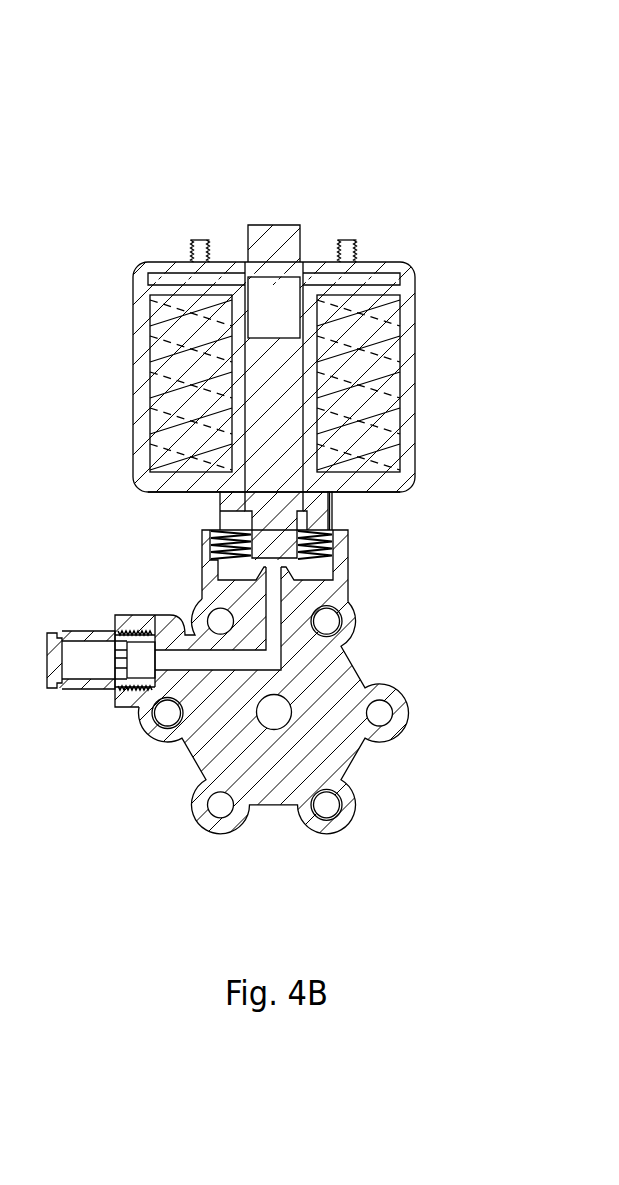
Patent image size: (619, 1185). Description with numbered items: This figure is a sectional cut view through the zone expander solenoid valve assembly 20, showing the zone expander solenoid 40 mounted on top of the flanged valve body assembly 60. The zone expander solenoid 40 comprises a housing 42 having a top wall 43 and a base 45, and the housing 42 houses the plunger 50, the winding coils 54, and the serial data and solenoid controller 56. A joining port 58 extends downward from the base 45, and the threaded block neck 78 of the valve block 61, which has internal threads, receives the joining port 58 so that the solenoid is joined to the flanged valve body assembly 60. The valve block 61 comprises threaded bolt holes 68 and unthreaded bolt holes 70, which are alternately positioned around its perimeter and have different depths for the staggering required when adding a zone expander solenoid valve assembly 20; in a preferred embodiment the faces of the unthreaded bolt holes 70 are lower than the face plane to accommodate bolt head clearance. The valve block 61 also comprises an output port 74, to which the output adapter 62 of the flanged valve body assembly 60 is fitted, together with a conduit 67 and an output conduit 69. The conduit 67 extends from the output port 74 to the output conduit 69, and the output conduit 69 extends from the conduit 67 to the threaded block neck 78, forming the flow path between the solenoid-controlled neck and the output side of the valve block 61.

The zone expander solenoid valve assembly 20 is at (367, 85).
The zone expander solenoid 40 is at (247, 343).
The housing 42 is at (0, 276).
The top wall 43 is at (310, 268).
The base 45 is at (163, 493).
The plunger 50 is at (268, 399).
The winding coils 54 is at (182, 372).
The serial data and solenoid controller 56 is at (355, 306).
The joining port 58 is at (333, 512).
The flanged valve body assembly 60 is at (256, 728).
The valve block 61 is at (357, 762).
The output adapter 62 is at (73, 686).
The conduit 67 is at (207, 698).
The threaded bolt holes 68 is at (343, 623).
The output conduit 69 is at (288, 617).
The unthreaded bolt holes 70 is at (207, 617).
The output port 74 is at (133, 613).
The threaded block neck 78 is at (335, 568).